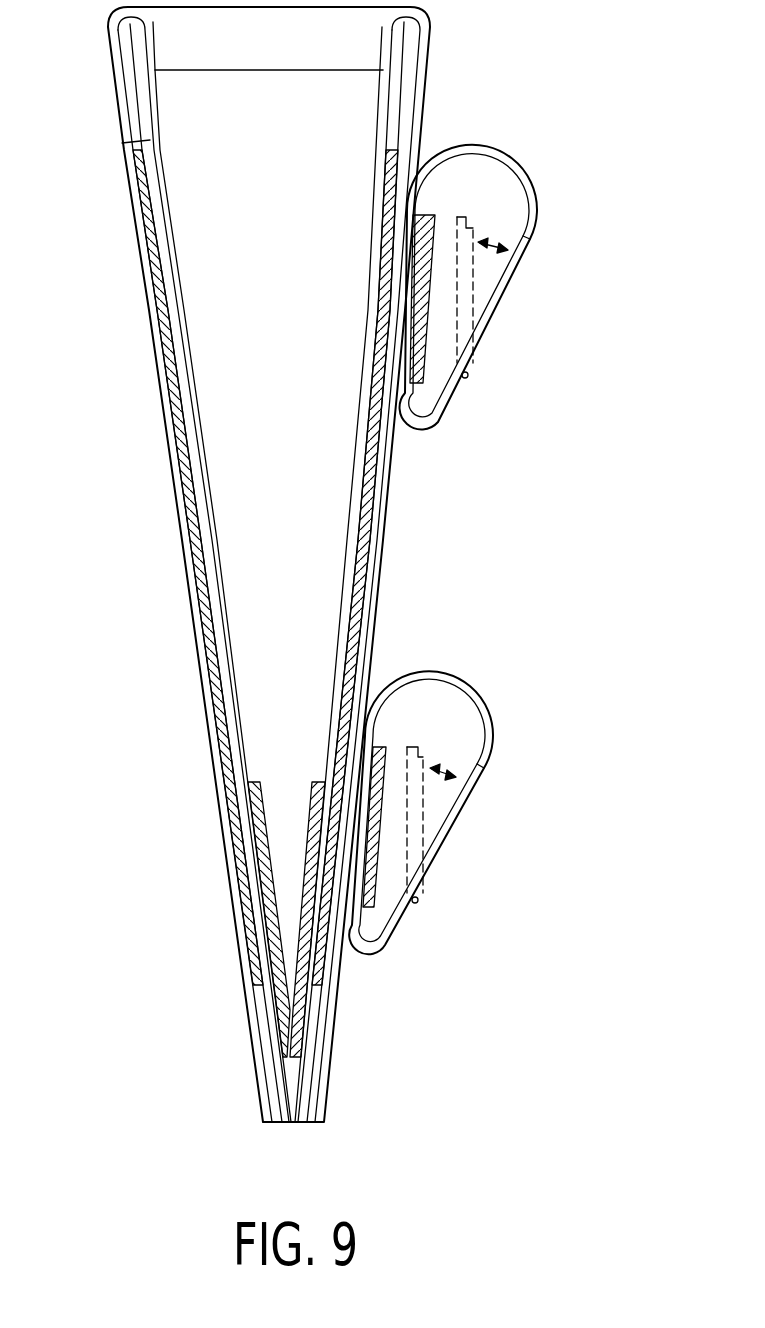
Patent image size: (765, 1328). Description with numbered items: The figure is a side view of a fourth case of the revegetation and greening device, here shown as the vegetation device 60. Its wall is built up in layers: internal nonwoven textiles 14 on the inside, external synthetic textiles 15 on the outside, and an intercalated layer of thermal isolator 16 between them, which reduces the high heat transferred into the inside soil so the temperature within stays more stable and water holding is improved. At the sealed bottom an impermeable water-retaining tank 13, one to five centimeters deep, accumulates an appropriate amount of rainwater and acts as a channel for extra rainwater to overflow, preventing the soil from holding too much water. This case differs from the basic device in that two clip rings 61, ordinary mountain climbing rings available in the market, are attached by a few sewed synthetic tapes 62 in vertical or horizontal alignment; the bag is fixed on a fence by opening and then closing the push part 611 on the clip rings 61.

The impermeable water-retaining tank 13 is at (270, 843).
The internal nonwoven textiles 14 is at (140, 143).
The external synthetic textiles 15 is at (138, 233).
The thermal isolator 16 is at (160, 290).
The vegetation device 60 is at (238, 564).
The clip rings 61 is at (525, 164).
The sewed synthetic tapes 62 is at (437, 217).
The push part 611 is at (510, 297).